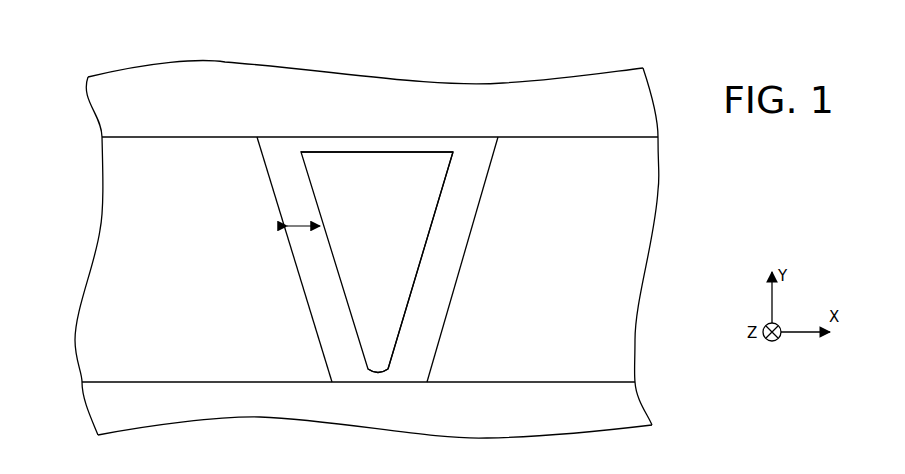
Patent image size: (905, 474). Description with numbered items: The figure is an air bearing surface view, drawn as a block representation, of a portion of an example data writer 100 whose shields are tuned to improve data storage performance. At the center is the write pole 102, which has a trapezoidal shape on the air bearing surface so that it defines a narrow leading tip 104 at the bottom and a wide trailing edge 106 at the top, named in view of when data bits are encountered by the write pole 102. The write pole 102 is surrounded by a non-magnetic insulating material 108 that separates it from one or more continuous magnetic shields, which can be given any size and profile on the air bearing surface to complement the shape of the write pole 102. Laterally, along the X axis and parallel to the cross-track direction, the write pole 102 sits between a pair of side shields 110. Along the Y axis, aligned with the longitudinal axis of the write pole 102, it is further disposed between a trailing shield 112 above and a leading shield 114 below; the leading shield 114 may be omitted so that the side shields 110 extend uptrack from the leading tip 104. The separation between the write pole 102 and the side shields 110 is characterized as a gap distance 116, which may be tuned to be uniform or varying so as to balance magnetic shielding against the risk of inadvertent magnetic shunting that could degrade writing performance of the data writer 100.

The data writer 100 is at (98, 40).
The write pole 102 is at (377, 262).
The leading tip 104 is at (380, 383).
The trailing edge 106 is at (400, 152).
The non-magnetic insulating material 108 is at (457, 217).
The side shields 110 is at (385, 259).
The trailing shield 112 is at (380, 115).
The leading shield 114 is at (358, 396).
The gap distance 116 is at (293, 229).